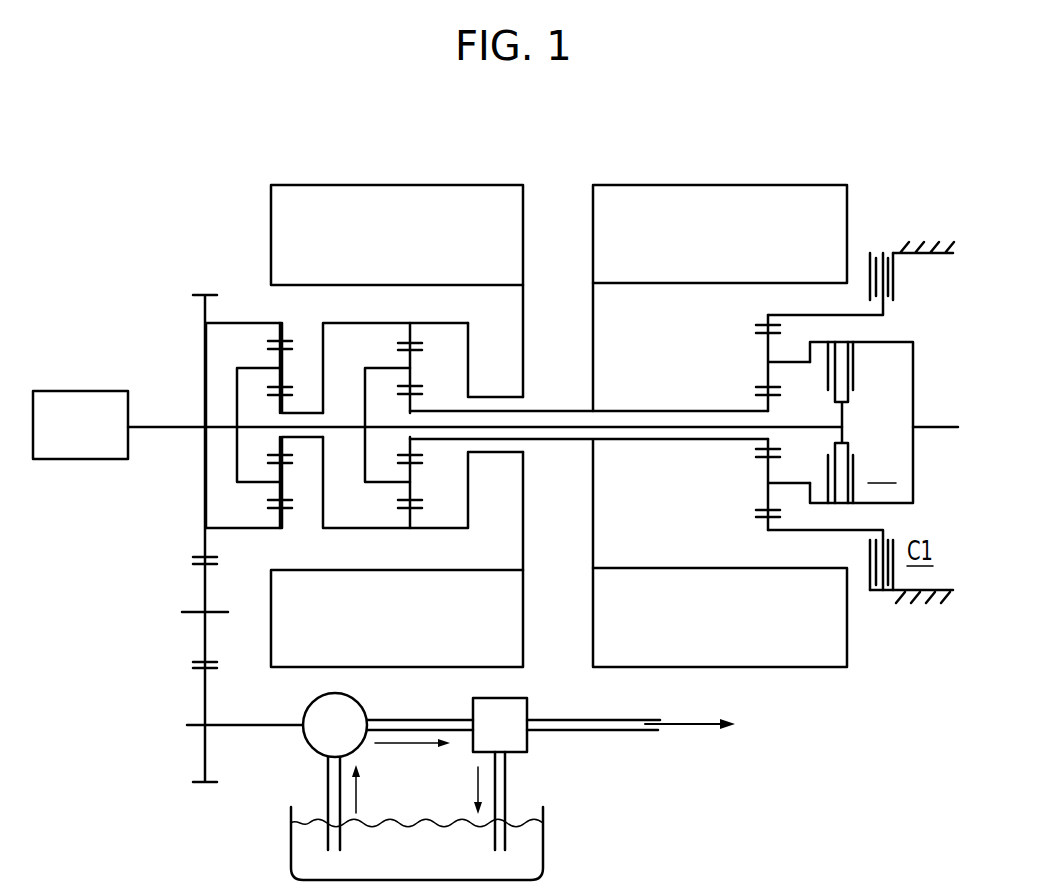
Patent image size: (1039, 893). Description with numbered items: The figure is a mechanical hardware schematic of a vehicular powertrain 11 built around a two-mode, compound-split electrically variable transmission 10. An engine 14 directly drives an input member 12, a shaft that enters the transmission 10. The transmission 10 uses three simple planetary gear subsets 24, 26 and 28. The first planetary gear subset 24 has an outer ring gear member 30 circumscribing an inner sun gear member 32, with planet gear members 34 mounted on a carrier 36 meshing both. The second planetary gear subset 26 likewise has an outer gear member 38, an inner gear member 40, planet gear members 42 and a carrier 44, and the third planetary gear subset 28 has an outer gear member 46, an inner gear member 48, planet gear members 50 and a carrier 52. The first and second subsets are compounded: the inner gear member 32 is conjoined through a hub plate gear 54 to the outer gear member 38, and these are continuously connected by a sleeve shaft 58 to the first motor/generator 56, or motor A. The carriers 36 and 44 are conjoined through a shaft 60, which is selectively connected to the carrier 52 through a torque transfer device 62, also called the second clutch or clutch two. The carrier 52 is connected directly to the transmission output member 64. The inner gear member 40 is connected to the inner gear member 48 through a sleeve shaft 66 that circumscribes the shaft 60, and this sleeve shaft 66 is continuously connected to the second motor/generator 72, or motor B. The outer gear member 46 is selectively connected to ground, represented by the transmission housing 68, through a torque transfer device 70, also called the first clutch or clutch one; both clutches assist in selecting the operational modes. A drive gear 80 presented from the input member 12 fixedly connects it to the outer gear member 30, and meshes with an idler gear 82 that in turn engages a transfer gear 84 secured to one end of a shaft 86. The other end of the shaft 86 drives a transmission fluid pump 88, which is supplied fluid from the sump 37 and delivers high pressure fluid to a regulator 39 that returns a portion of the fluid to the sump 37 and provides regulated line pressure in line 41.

The electrically variable transmission 10 is at (556, 165).
The vehicular powertrain 11 is at (137, 283).
The input member 12 is at (156, 426).
The engine 14 is at (93, 439).
The first planetary gear subset 24 is at (245, 303).
The second planetary gear subset 26 is at (442, 332).
The third planetary gear subset 28 is at (720, 341).
The outer gear member 30 is at (287, 334).
The inner gear member 32 is at (289, 396).
The planet gear members 34 is at (272, 358).
The carrier 36 is at (237, 456).
The outer gear member 38 is at (398, 343).
The inner gear member 40 is at (403, 454).
The planet gear members 42 is at (412, 378).
The carrier 44 is at (365, 468).
The outer gear member 46 is at (765, 325).
The inner gear member 48 is at (778, 450).
The planet gear members 50 is at (766, 375).
The carrier 52 is at (900, 342).
The hub plate gear 54 is at (325, 357).
The first motor/generator 56 is at (409, 252).
The sleeve shaft 58 is at (497, 397).
The shaft 60 is at (552, 427).
The torque transfer device 62 is at (856, 366).
The transmission output member 64 is at (937, 426).
The sleeve shaft 66 is at (615, 411).
The transmission housing 68 is at (937, 243).
The torque transfer device 70 is at (900, 272).
The second motor/generator 72 is at (731, 252).
The drive gear 80 is at (203, 496).
The idler gear 82 is at (203, 633).
The transfer gear 84 is at (203, 697).
The shaft 86 is at (243, 727).
The transmission fluid pump 88 is at (347, 713).
The regulator 39 is at (527, 747).
The line 41 is at (653, 731).
The sump 37 is at (543, 845).